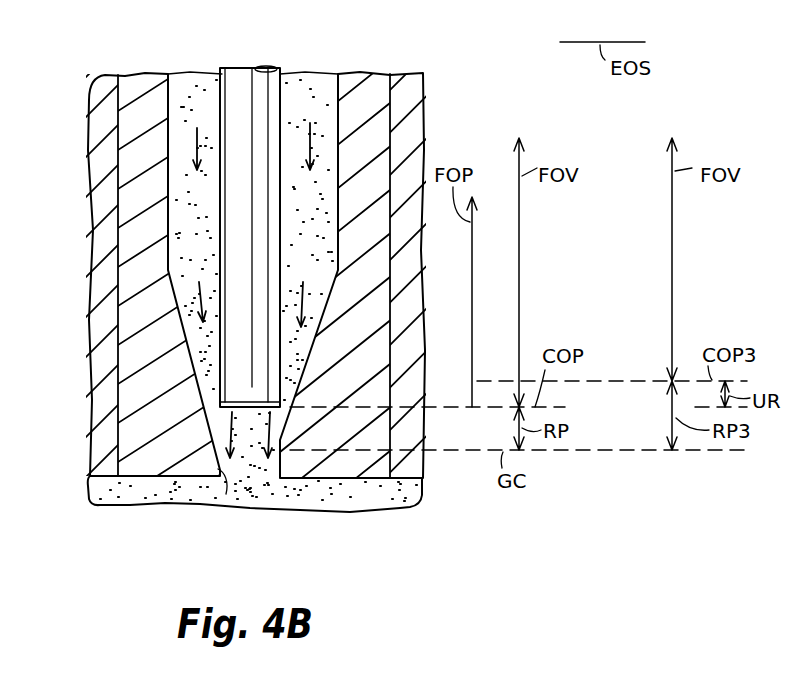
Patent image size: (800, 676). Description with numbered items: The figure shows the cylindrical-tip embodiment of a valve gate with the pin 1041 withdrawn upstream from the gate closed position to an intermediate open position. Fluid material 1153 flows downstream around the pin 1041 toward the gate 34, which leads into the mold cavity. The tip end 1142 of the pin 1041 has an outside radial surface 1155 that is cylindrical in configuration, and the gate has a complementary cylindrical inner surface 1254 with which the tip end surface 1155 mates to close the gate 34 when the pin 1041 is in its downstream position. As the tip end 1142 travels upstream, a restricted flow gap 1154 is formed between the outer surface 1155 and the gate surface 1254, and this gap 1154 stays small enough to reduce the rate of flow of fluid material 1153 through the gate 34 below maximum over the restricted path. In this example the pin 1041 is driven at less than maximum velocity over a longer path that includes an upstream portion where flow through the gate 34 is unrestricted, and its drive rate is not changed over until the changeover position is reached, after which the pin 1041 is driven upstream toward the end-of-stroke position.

The valve pin 1041 is at (250, 72).
The fluid material 1153 is at (310, 142).
The outer radial surface of the tip end 1155 is at (204, 383).
The restricted flow gap 1154 is at (168, 479).
The inner surface of the gate area 1254 is at (226, 494).
The gate 34 is at (241, 485).
The tip end of the pin 1142 is at (259, 465).